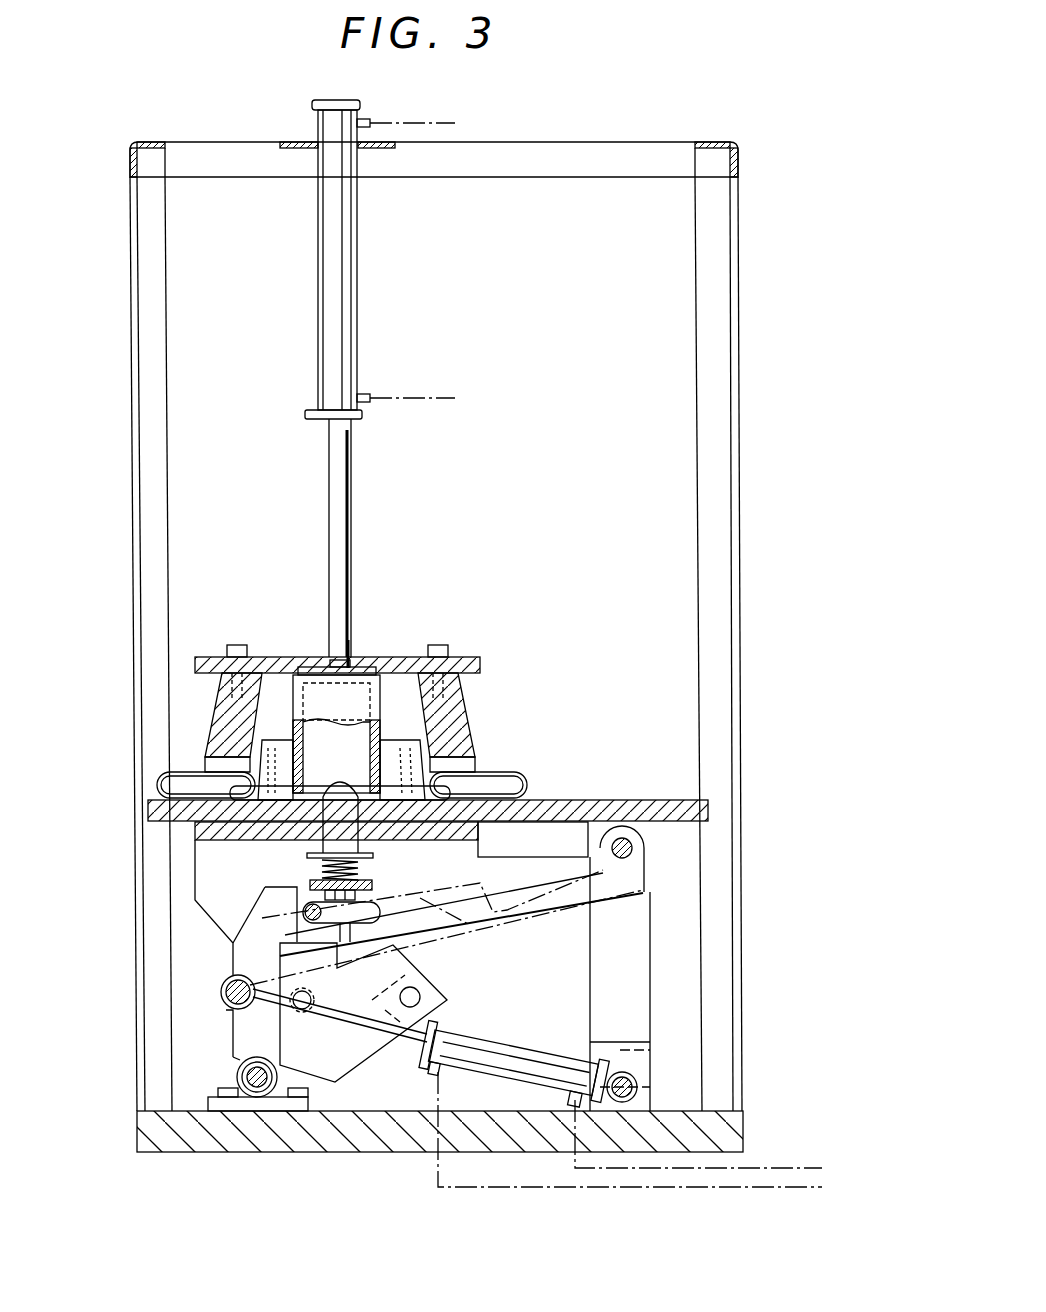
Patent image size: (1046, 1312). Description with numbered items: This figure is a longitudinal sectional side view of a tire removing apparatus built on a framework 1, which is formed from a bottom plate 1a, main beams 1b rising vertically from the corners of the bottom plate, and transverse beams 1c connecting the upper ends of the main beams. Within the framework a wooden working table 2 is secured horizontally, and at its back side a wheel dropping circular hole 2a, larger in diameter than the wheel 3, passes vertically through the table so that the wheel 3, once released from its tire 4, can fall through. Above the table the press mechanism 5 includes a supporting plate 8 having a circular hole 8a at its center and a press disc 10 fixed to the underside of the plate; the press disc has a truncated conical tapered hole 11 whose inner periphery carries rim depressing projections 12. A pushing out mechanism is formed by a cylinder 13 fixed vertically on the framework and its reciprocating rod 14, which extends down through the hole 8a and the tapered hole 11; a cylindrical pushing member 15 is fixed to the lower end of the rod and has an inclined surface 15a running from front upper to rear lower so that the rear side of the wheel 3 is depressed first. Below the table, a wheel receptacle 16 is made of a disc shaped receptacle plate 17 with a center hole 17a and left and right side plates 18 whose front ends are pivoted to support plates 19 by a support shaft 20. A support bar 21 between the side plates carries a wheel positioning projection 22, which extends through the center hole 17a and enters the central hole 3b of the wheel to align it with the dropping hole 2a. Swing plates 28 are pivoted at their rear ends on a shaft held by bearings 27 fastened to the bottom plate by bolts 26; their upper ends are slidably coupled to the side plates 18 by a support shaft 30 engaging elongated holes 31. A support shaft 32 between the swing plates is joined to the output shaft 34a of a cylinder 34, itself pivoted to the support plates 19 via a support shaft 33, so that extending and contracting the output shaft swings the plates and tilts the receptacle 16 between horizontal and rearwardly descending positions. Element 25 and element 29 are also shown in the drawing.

The framework 1 is at (432, 650).
The bottom plate 1a is at (152, 1148).
The main beams 1b is at (718, 329).
The transverse beams 1c is at (225, 155).
The working table 2 is at (150, 812).
The wheel dropping circular hole 2a is at (442, 772).
The wheel 3 is at (350, 693).
The central hole of the wheel 3b is at (352, 800).
The tire 4 is at (520, 780).
The press mechanism 5 is at (203, 688).
The supporting plate 8 is at (210, 656).
The circular hole 8a is at (378, 660).
The press disc 10 is at (215, 724).
The tapered hole 11 is at (278, 702).
The rim depressing projections 12 is at (456, 702).
The cylinder 13 is at (342, 255).
The reciprocating rod 14 is at (332, 498).
The cylindrical pushing member 15 is at (305, 666).
The inclined surface 15a is at (350, 650).
The wheel receptacle 16 is at (185, 851).
The receptacle plate 17 is at (536, 822).
The center hole of the receptacle plate 17a is at (302, 840).
The side plates 18 is at (240, 956).
The support plates 19 is at (648, 1000).
The support shaft 20 is at (634, 848).
The support bar 21 is at (374, 886).
The wheel positioning projection 22 is at (334, 790).
The cam plate 25 is at (372, 1080).
The bolts 26 is at (222, 1093).
The bearings 27 is at (218, 1105).
The swing plates 28 is at (233, 1046).
The pivot shaft 29 is at (257, 1100).
The support shaft 30 is at (302, 910).
The elongated holes 31 is at (420, 940).
The support shaft 32 is at (222, 995).
The support shaft 33 is at (638, 1088).
The cylinder 34 is at (537, 1113).
The output shaft 34a is at (408, 1102).